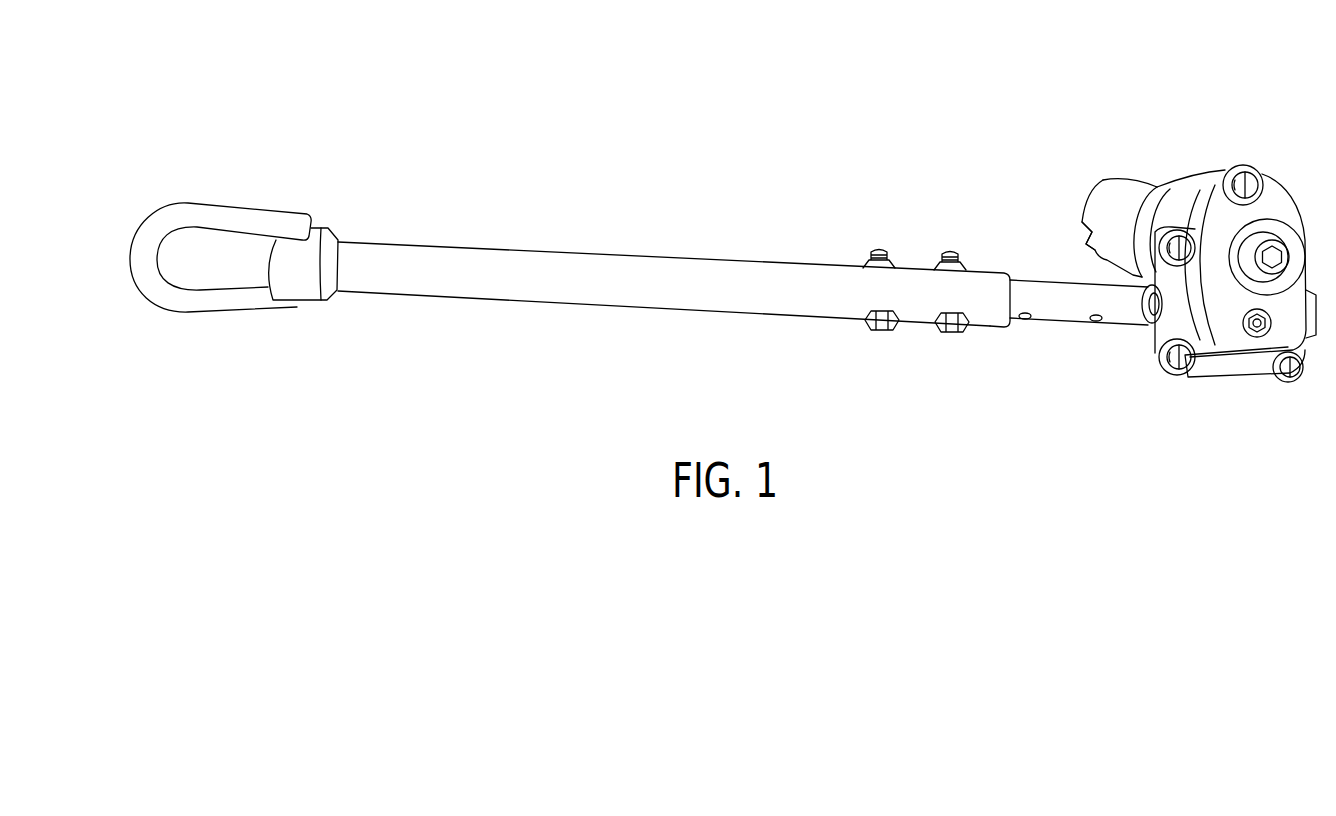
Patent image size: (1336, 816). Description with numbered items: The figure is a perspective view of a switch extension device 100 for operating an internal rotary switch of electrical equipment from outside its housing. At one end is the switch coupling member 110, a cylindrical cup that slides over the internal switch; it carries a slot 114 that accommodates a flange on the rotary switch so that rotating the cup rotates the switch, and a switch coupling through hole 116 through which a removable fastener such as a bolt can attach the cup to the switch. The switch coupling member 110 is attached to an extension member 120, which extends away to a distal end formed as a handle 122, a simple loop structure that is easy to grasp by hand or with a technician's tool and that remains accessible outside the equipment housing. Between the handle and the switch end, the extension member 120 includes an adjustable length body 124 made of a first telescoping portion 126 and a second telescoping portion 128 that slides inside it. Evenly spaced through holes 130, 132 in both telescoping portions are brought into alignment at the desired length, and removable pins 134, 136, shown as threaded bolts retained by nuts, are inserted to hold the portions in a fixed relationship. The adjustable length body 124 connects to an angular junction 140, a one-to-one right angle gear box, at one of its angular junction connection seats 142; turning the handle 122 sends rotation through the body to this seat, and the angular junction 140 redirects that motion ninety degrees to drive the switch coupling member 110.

The switch extension device 100 is at (184, 136).
The switch coupling member 110 is at (1124, 176).
The slot 114 is at (1093, 238).
The switch coupling through hole 116 is at (1152, 182).
The extension member 120 is at (358, 295).
The handle 122 is at (245, 202).
The adjustable length body 124 is at (680, 262).
The first telescoping portion 126 is at (652, 312).
The second telescoping portion 128 is at (1055, 324).
The through hole 130 is at (1026, 320).
The through hole 132 is at (1097, 322).
The removable pin 134 is at (882, 331).
The removable pin 136 is at (953, 333).
The angular junction 140 is at (1255, 378).
The angular junction connection seat 142 is at (1180, 364).